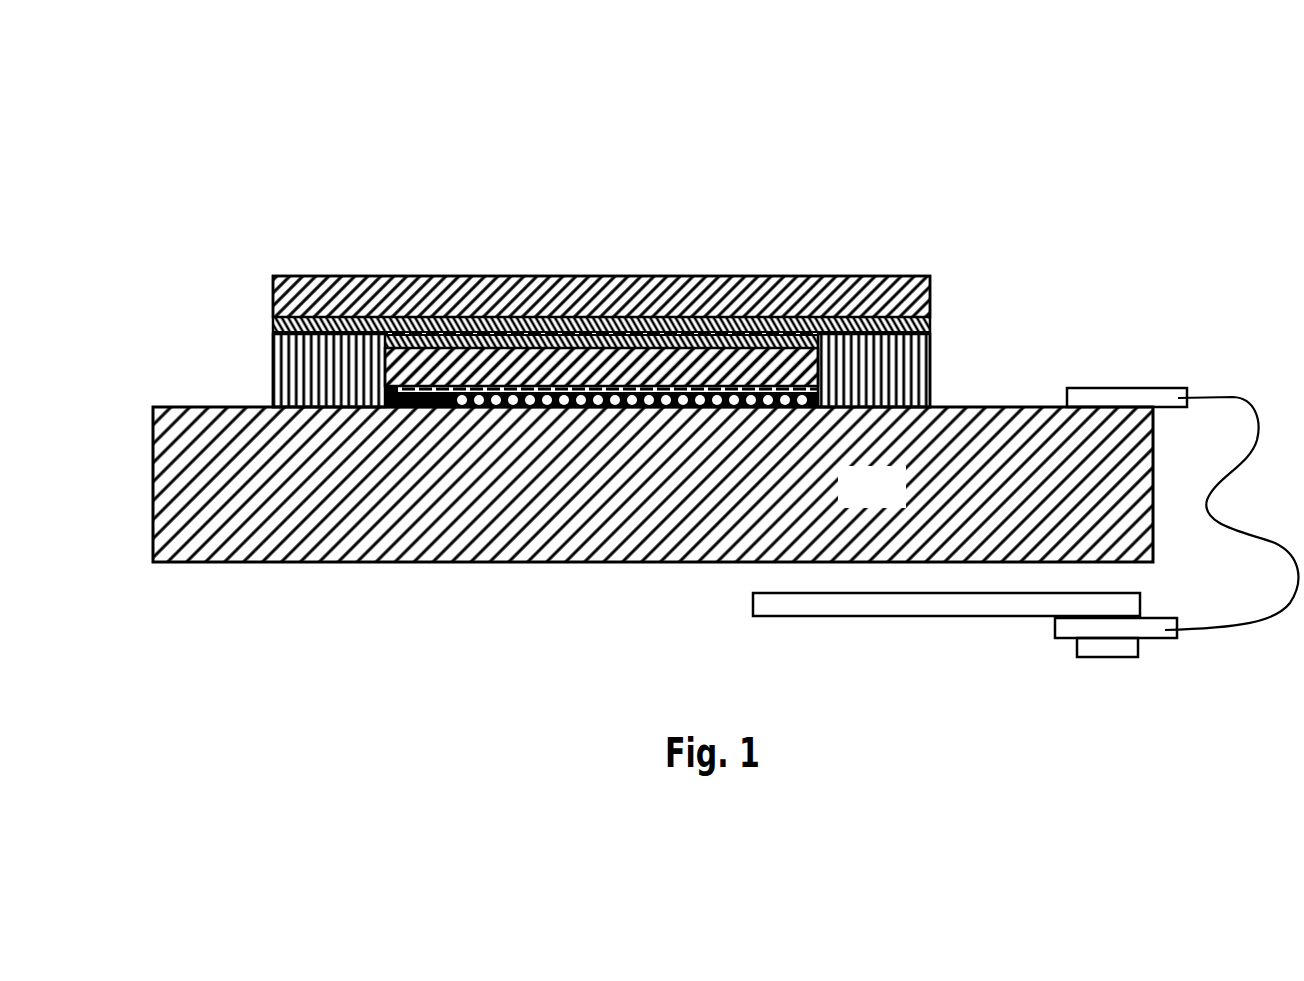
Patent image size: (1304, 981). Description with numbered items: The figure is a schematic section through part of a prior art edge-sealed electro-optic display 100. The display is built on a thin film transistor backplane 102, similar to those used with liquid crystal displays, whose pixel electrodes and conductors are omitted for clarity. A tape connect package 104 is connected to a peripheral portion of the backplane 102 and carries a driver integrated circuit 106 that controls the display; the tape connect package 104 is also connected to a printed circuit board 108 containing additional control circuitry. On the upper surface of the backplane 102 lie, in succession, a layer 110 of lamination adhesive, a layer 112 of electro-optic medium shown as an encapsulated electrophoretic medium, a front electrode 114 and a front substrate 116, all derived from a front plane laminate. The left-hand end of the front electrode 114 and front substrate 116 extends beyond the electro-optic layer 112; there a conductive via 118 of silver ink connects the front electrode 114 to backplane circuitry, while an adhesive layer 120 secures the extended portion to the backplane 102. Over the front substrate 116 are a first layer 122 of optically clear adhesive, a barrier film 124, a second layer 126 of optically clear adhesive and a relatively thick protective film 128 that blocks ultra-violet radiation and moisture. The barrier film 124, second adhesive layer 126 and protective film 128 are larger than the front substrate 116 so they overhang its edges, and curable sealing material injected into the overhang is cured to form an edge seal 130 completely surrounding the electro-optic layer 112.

The electro-optic display 100 is at (1070, 340).
The thin film transistor backplane 102 is at (653, 484).
The tape connect package 104 is at (1127, 400).
The driver integrated circuit 106 is at (1100, 657).
The printed circuit board 108 is at (835, 616).
The layer of lamination adhesive 110 is at (858, 312).
The layer of electro-optic medium 112 is at (757, 372).
The front electrode 114 is at (693, 390).
The front substrate 116 is at (618, 372).
The conductive via 118 is at (380, 407).
The adhesive layer 120 is at (427, 400).
The first layer of optically clear adhesive 122 is at (535, 336).
The barrier film 124 is at (441, 336).
The second layer of optically clear adhesive 126 is at (353, 317).
The protective film 128 is at (313, 288).
The edge seal 130 is at (307, 397).